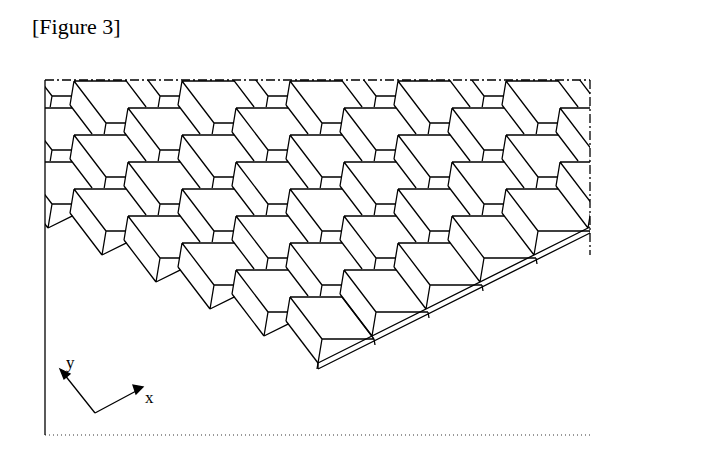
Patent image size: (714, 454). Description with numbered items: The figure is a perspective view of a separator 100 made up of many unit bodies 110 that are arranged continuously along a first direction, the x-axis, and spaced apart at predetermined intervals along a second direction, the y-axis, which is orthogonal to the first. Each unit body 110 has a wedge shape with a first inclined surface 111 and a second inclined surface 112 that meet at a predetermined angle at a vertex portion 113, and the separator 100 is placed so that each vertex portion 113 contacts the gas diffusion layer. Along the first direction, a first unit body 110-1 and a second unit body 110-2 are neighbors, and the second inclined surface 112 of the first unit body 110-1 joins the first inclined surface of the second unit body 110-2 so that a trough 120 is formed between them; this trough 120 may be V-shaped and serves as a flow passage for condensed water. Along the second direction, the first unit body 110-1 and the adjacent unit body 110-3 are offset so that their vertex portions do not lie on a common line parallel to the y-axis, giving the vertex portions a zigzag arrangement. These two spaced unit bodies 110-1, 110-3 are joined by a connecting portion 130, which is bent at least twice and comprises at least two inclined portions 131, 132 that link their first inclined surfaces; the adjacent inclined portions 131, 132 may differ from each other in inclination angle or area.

The separator 100 is at (641, 65).
The unit body 110 is at (322, 228).
The first unit body 110-1 is at (323, 363).
The second unit body 110-2 is at (395, 293).
The unit body adjacent along the second direction 110-3 is at (181, 321).
The first inclined surface 111 is at (307, 340).
The second inclined surface 112 is at (340, 326).
The vertex portion 113 is at (287, 352).
The trough 120 is at (388, 333).
The connecting portion 130 is at (241, 342).
The inclined portion 131 is at (274, 333).
The inclined portion 132 is at (253, 304).